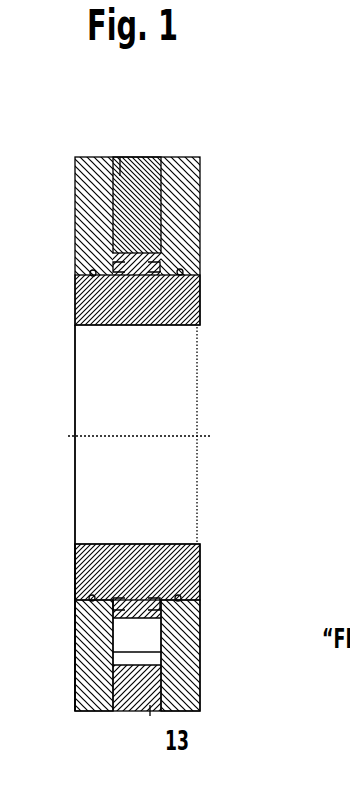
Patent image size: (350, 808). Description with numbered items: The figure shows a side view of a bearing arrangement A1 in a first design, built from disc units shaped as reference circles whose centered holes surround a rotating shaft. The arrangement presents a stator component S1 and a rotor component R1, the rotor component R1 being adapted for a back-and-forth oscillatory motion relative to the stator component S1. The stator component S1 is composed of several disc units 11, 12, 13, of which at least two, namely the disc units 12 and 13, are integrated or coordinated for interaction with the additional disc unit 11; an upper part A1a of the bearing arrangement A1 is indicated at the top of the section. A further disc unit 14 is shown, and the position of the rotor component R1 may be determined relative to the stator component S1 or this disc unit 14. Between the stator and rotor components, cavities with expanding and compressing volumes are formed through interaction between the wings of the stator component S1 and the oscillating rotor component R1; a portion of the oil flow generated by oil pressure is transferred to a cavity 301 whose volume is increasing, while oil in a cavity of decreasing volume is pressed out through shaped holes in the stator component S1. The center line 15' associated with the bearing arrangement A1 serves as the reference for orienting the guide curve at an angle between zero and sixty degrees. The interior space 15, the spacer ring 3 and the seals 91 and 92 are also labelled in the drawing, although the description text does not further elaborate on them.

The spacer ring 3 is at (243, 357).
The disc unit 11 is at (105, 274).
The disc unit 12 is at (192, 232).
The disc unit 13 is at (143, 170).
The disc unit 14 is at (195, 300).
The interior space 15 is at (160, 503).
The center line 15' is at (230, 414).
The first seal 91 is at (90, 288).
The second seal 92 is at (188, 266).
The cavity 301 is at (80, 688).
The bearing arrangement A1 is at (260, 140).
The upper part A1a is at (200, 183).
The stator component S1 is at (87, 440).
The rotor component R1 is at (112, 312).